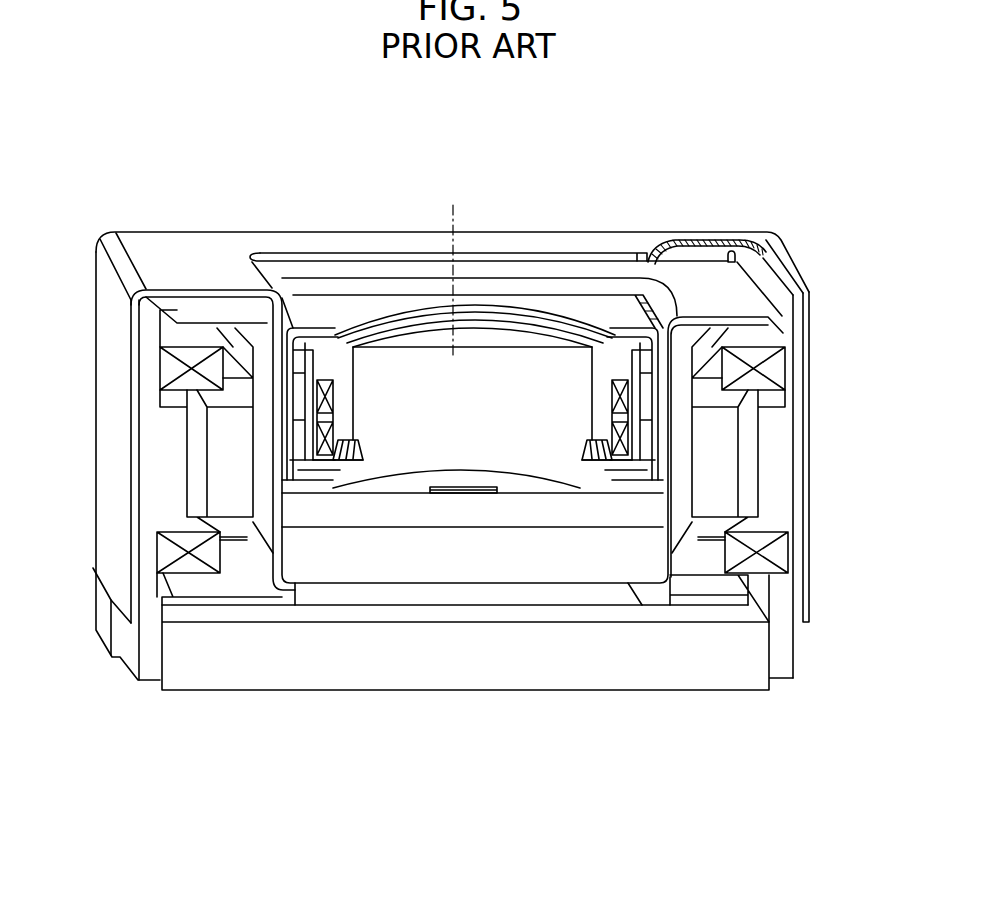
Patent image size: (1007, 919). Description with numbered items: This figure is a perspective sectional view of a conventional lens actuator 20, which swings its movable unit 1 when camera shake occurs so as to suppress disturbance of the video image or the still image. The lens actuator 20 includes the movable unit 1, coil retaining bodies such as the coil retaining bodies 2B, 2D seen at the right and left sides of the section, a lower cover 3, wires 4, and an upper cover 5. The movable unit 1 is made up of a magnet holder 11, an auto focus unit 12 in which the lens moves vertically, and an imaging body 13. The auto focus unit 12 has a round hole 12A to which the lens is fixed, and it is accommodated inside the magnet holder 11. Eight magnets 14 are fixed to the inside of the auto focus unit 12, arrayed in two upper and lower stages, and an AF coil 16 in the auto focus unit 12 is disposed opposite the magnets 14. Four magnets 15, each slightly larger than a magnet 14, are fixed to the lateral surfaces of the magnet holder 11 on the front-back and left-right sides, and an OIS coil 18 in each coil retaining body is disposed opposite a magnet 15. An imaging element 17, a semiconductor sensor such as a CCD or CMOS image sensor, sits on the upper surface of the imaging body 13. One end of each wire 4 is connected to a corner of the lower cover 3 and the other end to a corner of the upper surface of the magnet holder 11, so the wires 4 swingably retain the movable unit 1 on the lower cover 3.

The movable unit 1 is at (345, 770).
The coil retaining body 2B is at (783, 648).
The coil retaining body 2D is at (148, 618).
The lower cover 3 is at (508, 668).
The wire 4 is at (733, 252).
The upper cover 5 is at (173, 252).
The magnet holder 11 is at (243, 293).
The auto focus unit 12 is at (296, 333).
The round hole 12A is at (514, 367).
The imaging body 13 is at (390, 513).
The magnet 14 is at (298, 438).
The magnet 15 is at (247, 450).
The AF coil 16 is at (318, 380).
The imaging element 17 is at (462, 490).
The OIS coil 18 is at (162, 373).
The lens actuator 20 is at (647, 170).